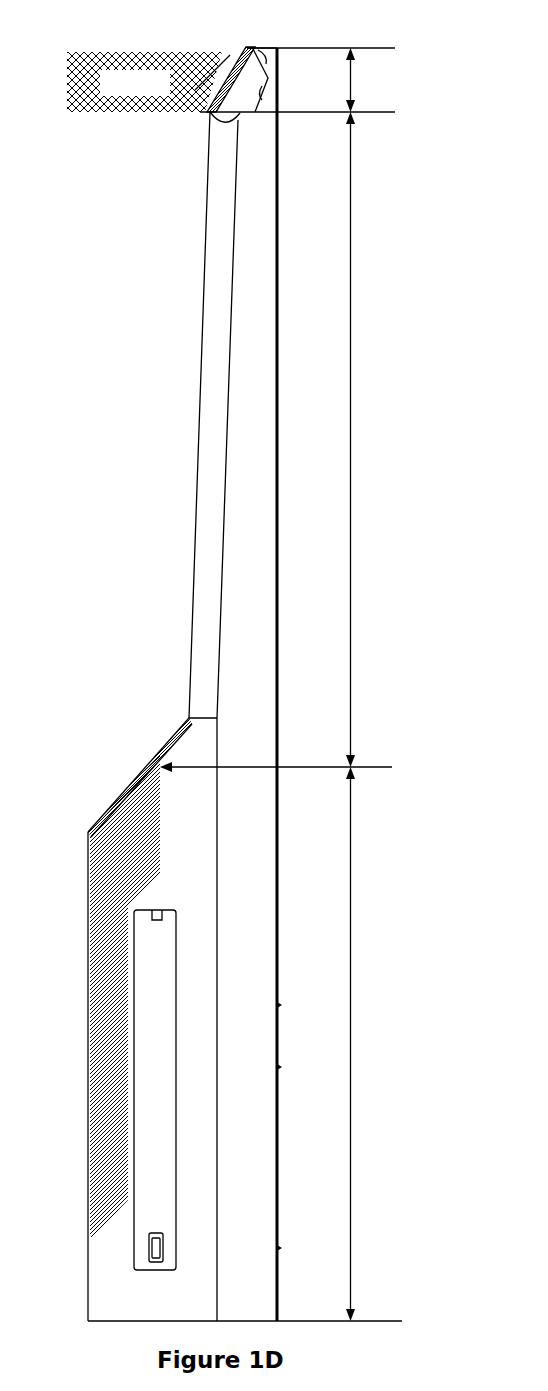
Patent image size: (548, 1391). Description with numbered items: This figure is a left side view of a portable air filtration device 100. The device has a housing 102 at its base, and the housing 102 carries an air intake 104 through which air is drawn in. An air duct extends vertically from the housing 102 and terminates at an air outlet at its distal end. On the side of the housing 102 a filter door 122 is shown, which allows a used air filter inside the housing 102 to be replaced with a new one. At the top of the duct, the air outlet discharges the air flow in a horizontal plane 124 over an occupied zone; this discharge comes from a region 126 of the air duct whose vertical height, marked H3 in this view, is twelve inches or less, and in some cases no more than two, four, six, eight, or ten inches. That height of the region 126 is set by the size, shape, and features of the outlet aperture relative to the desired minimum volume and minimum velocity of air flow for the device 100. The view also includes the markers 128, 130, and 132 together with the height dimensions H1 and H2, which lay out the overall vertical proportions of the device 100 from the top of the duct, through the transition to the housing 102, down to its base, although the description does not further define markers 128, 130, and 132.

The air filtration device 100 is at (48, 152).
The housing 102 is at (193, 1053).
The air intake 104 is at (105, 1102).
The filter door 122 is at (157, 1147).
The horizontal plane 124 is at (144, 82).
The region of the air duct 126 is at (262, 92).
The top of pole 128 is at (288, 41).
The base / ground level 130 is at (263, 1323).
The transition section 132 is at (295, 767).